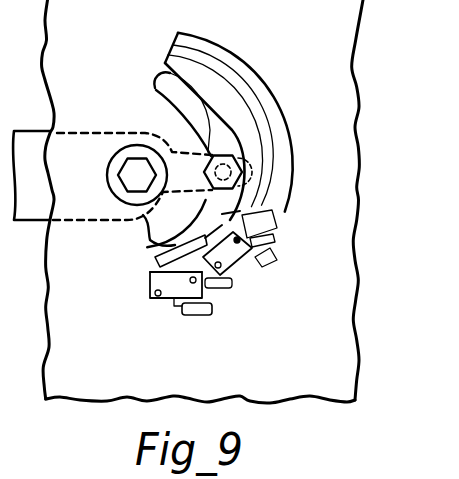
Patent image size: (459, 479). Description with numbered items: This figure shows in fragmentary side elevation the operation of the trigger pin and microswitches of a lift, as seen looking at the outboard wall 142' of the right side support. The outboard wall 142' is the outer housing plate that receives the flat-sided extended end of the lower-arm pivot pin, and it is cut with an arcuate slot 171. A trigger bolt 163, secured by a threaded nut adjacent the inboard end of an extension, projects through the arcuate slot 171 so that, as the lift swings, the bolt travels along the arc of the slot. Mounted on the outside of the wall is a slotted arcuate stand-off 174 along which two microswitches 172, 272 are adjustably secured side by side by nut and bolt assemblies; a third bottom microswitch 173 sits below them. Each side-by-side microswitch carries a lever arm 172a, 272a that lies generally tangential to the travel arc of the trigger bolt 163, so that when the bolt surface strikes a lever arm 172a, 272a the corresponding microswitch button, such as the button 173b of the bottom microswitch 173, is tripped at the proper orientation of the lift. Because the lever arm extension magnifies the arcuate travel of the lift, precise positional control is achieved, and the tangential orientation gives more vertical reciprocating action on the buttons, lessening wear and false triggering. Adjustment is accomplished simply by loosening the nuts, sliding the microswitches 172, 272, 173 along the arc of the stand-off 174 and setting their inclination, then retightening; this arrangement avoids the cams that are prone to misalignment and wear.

The outboard wall 142' is at (188, 201).
The trigger bolt 163 is at (200, 138).
The arcuate slot 171 is at (157, 78).
The microswitch 172 is at (240, 211).
The lever arm 172a is at (157, 243).
The bottom microswitch 173 is at (148, 288).
The microswitch button 173b is at (150, 272).
The slotted arcuate stand-off 174 is at (240, 62).
The microswitch 272 is at (277, 267).
The lever arm 272a is at (143, 215).